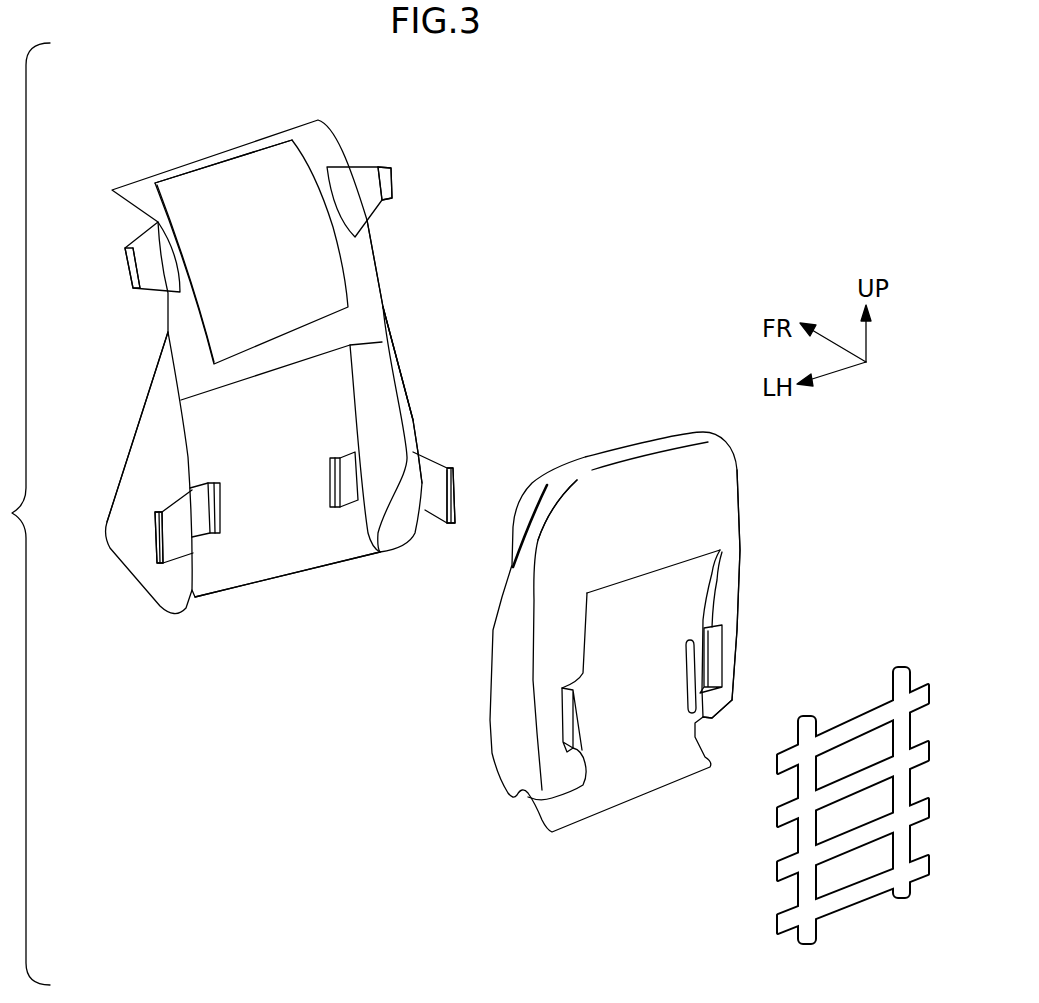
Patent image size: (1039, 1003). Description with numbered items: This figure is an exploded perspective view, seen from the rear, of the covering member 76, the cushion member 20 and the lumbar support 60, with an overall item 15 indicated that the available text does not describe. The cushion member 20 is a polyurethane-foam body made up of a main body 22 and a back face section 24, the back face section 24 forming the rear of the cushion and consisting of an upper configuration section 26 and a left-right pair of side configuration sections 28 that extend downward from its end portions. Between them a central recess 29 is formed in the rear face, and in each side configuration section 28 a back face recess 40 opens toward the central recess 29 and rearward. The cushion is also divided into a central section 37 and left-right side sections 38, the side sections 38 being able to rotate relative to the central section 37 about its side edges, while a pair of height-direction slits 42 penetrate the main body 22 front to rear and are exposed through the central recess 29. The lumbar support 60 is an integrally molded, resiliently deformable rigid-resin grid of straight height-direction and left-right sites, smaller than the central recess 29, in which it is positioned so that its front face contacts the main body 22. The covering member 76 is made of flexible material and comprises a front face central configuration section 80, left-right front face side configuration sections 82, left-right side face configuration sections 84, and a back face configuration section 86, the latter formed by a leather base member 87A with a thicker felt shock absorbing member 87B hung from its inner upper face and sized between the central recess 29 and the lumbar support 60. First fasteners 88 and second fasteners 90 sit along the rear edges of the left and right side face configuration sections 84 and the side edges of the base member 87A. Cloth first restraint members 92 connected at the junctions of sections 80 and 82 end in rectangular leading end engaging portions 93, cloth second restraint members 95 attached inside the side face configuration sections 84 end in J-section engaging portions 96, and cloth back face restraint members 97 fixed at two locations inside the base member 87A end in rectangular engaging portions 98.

The vehicle seat 15 is at (634, 248).
The cushion member 20 is at (780, 570).
The main body 22 is at (531, 487).
The back face section 24 is at (713, 518).
The upper configuration section 26 is at (612, 480).
The side configuration sections 28 is at (585, 628).
The central recess 29 is at (653, 575).
The central section 37 is at (672, 465).
The side sections 38 is at (733, 563).
The back face recesses 40 is at (557, 722).
The slits 42 is at (687, 683).
The lumbar support 60 is at (751, 892).
The covering member 76 is at (412, 298).
The front face central configuration section 80 is at (312, 567).
The front face side configuration sections 82 is at (380, 398).
The side face configuration sections 84 is at (392, 357).
The back face configuration section 86 is at (267, 90).
The base member 87A is at (248, 153).
The shock absorbing member 87B is at (193, 186).
The first fasteners 88 is at (162, 333).
The second fasteners 90 is at (385, 240).
The first restraint members 92 is at (203, 487).
The leading end engaging portion 93 is at (225, 515).
The second restraint members 95 is at (177, 512).
The engaging portions 96 is at (150, 540).
The back face restraint members 97 is at (358, 180).
The engaging portion 98 is at (388, 180).